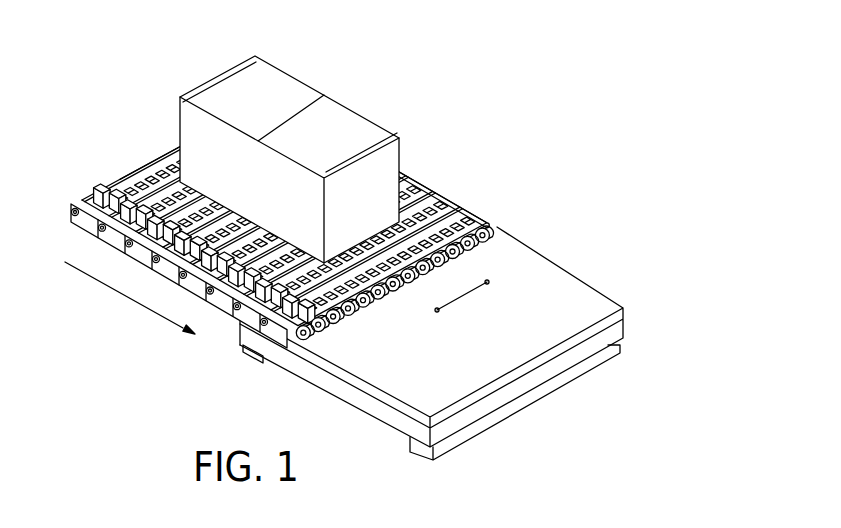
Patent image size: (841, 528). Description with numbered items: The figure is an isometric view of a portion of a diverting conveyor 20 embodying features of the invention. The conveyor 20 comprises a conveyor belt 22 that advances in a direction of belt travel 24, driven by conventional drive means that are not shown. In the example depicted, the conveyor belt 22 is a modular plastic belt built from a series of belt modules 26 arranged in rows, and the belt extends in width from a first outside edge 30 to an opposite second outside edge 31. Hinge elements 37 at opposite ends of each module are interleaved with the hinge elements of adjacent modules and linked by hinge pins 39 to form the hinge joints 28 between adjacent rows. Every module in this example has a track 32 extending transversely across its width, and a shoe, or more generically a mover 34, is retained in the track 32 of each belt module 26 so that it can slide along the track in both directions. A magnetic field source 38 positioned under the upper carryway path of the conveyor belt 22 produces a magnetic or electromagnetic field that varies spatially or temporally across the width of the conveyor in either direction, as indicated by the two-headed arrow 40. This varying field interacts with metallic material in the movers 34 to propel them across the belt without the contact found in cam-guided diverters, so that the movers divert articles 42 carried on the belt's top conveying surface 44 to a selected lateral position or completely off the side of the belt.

The conveyor 20 is at (512, 57).
The conveyor belt 22 is at (452, 200).
The direction of belt travel 24 is at (113, 304).
The belt module 26 is at (147, 167).
The hinge joint 28 is at (258, 322).
The first outside edge 30 is at (83, 222).
The second outside edge 31 is at (413, 173).
The track 32 is at (180, 153).
The mover 34 is at (99, 186).
The hinge element 37 is at (487, 233).
The magnetic field source 38 is at (372, 407).
The hinge pin 39 is at (130, 244).
The two-headed arrow 40 is at (467, 293).
The article 42 is at (284, 81).
The top conveying surface 44 is at (401, 167).